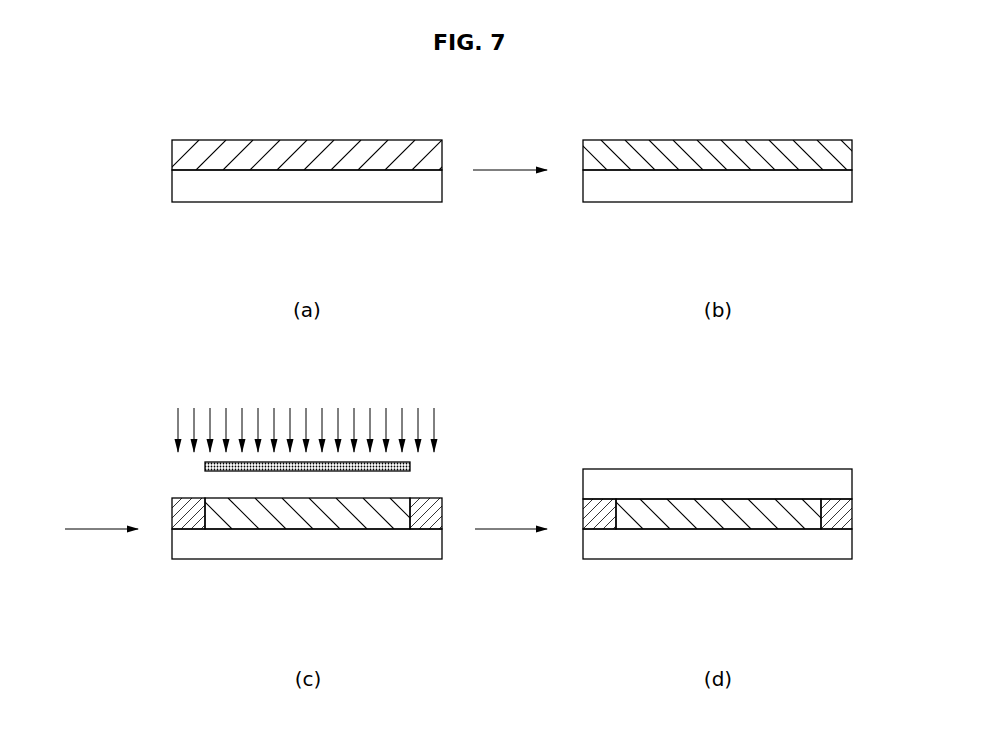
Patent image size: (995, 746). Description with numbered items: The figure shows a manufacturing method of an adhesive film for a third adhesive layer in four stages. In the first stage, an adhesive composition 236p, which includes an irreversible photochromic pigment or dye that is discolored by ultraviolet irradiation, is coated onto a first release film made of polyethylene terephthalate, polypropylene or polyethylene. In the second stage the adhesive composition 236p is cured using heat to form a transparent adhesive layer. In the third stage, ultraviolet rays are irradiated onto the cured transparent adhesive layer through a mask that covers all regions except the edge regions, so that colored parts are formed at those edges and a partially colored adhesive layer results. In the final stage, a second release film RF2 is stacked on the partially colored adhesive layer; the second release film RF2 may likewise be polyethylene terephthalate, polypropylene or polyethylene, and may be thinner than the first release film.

The adhesive composition 236p is at (386, 150).
The second release film RF2 is at (605, 485).